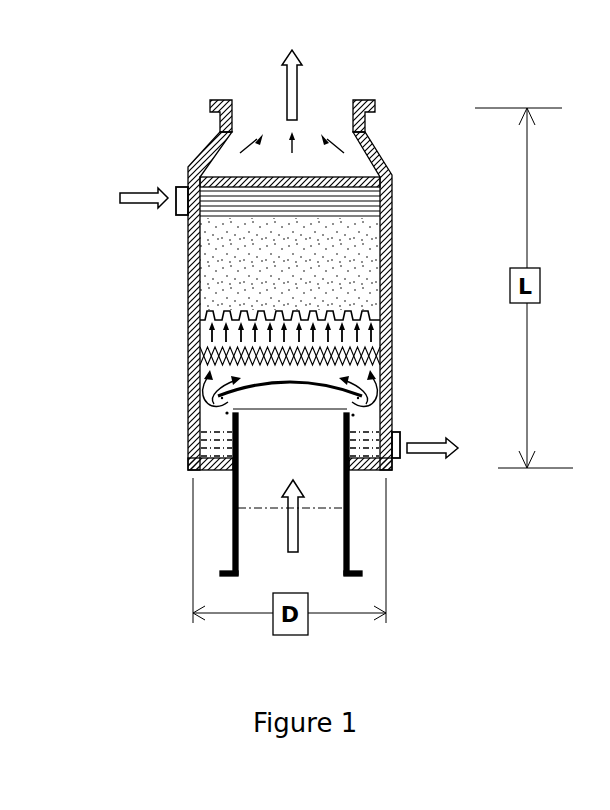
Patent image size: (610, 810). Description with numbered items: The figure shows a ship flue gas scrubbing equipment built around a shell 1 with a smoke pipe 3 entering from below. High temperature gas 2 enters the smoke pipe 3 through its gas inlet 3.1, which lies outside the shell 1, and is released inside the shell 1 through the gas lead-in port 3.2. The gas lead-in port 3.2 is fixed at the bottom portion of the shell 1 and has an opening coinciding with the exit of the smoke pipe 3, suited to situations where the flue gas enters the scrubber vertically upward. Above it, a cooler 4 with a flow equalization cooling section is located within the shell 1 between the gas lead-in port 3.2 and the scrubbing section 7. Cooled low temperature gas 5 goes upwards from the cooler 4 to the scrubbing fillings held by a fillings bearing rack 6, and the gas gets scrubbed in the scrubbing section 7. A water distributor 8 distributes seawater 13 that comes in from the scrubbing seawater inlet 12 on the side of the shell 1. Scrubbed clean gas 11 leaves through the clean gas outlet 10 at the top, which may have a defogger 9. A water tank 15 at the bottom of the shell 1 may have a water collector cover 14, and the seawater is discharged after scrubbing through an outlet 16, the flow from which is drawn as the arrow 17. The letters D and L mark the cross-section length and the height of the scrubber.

The shell 1 is at (200, 443).
The high temperature gas 2 is at (300, 498).
The smoke pipe 3 is at (233, 518).
The gas inlet 3.1 is at (313, 568).
The gas lead-in port 3.2 is at (372, 393).
The cooler 4 is at (375, 347).
The cooled low temperature gas 5 is at (207, 328).
The fillings bearing rack 6 is at (375, 310).
The scrubbing section 7 is at (375, 262).
The water distributor 8 is at (368, 210).
The defogger 9 is at (252, 180).
The clean gas outlet 10 is at (347, 100).
The scrubbed clean gas 11 is at (285, 102).
The scrubbing seawater inlet 12 is at (175, 187).
The seawater 13 is at (140, 199).
The water collector cover 14 is at (200, 380).
The water tank 15 is at (200, 435).
The outlet 16 is at (400, 435).
The liquid outlet flow 17 is at (433, 450).